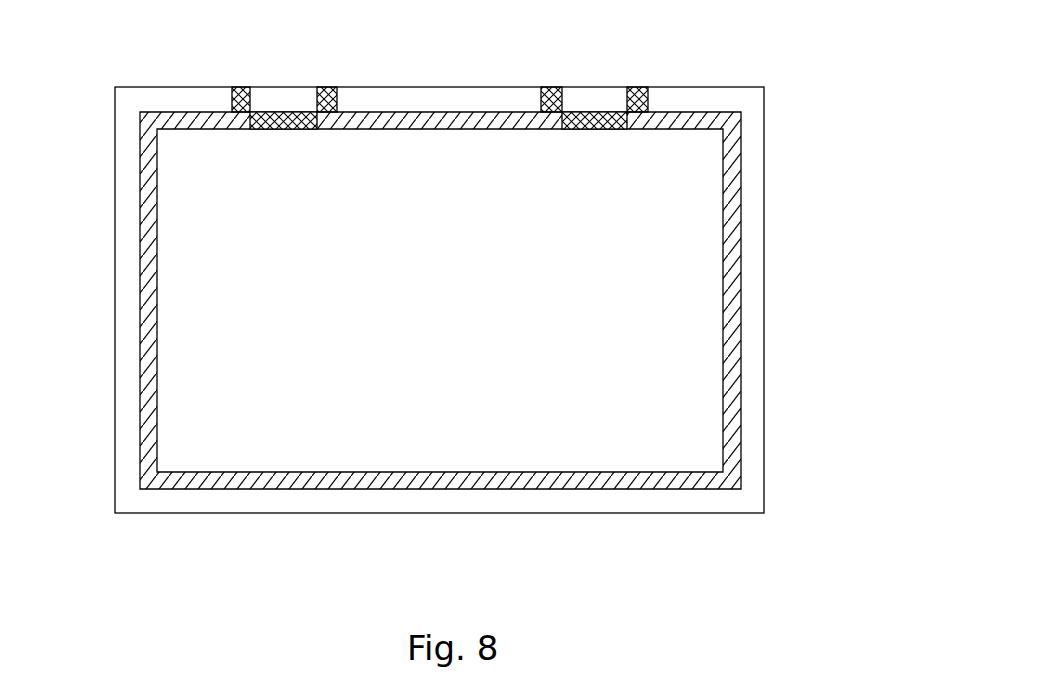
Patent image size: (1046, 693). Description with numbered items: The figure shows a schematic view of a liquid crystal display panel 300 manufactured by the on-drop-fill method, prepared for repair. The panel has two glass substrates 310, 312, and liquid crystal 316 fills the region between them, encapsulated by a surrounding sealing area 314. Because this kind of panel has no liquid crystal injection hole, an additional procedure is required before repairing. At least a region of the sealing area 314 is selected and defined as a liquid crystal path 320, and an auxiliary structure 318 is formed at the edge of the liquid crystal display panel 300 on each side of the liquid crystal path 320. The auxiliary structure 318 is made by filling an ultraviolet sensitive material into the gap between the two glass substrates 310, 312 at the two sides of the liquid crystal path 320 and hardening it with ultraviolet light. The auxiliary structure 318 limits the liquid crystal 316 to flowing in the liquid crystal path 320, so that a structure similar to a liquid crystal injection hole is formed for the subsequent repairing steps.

The liquid crystal display panel 300 is at (811, 78).
The glass substrate 310 is at (115, 415).
The glass substrate 312 is at (115, 308).
The sealing area 314 is at (180, 477).
The liquid crystal 316 is at (377, 440).
The auxiliary structure 318 is at (241, 87).
The liquid crystal path 320 is at (287, 112).